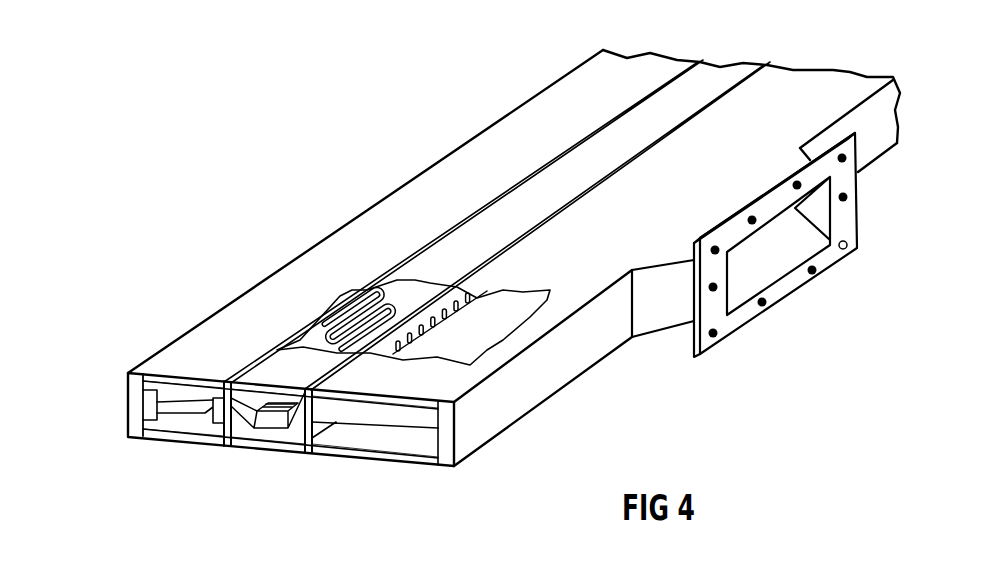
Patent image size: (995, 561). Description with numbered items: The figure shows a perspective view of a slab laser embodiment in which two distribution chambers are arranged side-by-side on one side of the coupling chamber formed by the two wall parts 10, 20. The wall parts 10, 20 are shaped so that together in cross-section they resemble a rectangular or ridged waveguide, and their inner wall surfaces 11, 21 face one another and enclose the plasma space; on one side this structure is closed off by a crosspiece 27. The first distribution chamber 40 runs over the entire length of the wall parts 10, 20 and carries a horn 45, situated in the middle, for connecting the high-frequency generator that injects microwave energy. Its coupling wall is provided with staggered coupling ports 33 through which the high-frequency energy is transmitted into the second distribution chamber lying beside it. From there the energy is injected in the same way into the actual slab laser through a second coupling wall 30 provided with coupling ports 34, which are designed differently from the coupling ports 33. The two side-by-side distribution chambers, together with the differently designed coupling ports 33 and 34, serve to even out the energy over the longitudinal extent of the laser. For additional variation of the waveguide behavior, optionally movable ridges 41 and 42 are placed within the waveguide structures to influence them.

The wall part 10 is at (166, 441).
The inner wall surface 11 is at (190, 412).
The wall part 20 is at (198, 387).
The inner wall surface 21 is at (189, 410).
The crosspiece 27 is at (128, 403).
The coupling wall 30 is at (243, 442).
The coupling ports 33 is at (490, 293).
The coupling ports 34 is at (319, 327).
The first distribution chamber 40 is at (375, 462).
The ridge 41 is at (266, 425).
The ridge 42 is at (276, 406).
The horn 45 is at (661, 312).